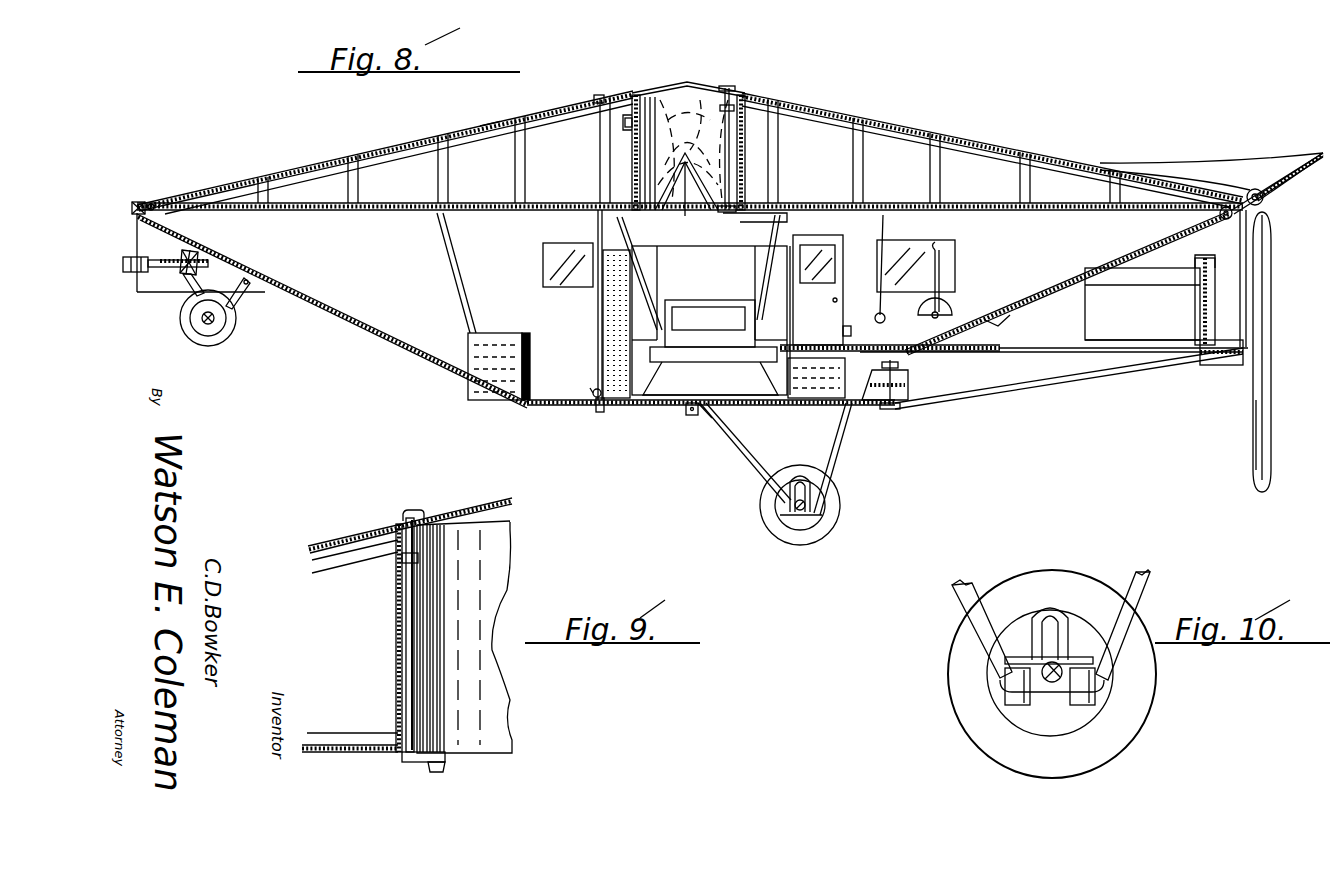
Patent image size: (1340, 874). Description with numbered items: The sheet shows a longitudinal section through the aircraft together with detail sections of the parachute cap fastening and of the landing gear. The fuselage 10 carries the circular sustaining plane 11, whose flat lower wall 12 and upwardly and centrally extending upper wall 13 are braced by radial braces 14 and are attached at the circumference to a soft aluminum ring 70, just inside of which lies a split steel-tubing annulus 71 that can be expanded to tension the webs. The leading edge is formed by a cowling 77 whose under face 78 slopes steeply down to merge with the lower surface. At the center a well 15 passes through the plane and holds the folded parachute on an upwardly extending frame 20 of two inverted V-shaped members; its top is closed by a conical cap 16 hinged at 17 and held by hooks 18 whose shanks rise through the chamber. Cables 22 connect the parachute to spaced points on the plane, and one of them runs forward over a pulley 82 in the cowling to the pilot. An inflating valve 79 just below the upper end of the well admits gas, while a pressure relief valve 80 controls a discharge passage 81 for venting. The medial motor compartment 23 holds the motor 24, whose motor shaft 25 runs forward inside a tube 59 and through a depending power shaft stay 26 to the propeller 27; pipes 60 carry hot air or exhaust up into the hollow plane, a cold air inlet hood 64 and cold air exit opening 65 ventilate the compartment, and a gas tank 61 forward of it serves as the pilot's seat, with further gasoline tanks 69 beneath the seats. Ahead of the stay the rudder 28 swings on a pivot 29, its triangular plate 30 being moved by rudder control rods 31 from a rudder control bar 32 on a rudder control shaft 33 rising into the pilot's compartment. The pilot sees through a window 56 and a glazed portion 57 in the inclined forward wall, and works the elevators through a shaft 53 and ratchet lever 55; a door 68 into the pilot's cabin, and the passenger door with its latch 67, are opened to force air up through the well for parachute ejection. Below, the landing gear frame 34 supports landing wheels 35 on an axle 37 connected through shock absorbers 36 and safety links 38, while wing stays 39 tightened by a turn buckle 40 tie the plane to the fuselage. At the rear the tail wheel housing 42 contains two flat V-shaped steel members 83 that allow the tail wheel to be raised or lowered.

In FIG. 8, the fuselage 10 is at (395, 342).
In FIG. 8, the sustaining plane 11 is at (492, 103).
In FIG. 8, the lower wall 12 is at (343, 212).
In FIG. 9, the lower wall 12 is at (352, 756).
In FIG. 8, the upper wall 13 is at (420, 145).
In FIG. 9, the upper wall 13 is at (313, 546).
In FIG. 8, the radial braces 14 is at (360, 186).
In FIG. 9, the radial braces 14 is at (352, 557).
In FIG. 8, the well 15 is at (688, 118).
In FIG. 9, the well 15 is at (495, 688).
In FIG. 8, the cap 16 is at (655, 92).
In FIG. 9, the cap 16 is at (500, 500).
In FIG. 8, the hinge 17 is at (598, 94).
In FIG. 8, the hooks 18 is at (730, 88).
In FIG. 9, the hooks 18 is at (420, 510).
In FIG. 8, the frame 20 is at (668, 180).
In FIG. 8, the cables 22 is at (906, 124).
In FIG. 8, the motor compartment 23 is at (706, 258).
In FIG. 8, the motor 24 is at (707, 310).
In FIG. 8, the motor shaft 25 is at (1075, 352).
In FIG. 8, the power shaft stay 26 is at (1230, 304).
In FIG. 8, the propeller 27 is at (1270, 410).
In FIG. 8, the rudder 28 is at (1090, 322).
In FIG. 8, the pivot 29 is at (1190, 255).
In FIG. 8, the triangular plate 30 is at (1125, 352).
In FIG. 8, the rudder control rods 31 is at (995, 380).
In FIG. 8, the rudder control bar 32 is at (888, 406).
In FIG. 8, the rudder control shaft 33 is at (918, 396).
In FIG. 8, the landing gear frame 34 is at (745, 460).
In FIG. 10, the landing gear frame 34 is at (968, 596).
In FIG. 8, the landing wheels 35 is at (795, 535).
In FIG. 10, the landing wheels 35 is at (1140, 698).
In FIG. 10, the shock absorbers 36 is at (1018, 695).
In FIG. 8, the axle 37 is at (812, 512).
In FIG. 10, the axle 37 is at (1055, 695).
In FIG. 10, the safety links 38 is at (1052, 608).
In FIG. 8, the wing stays 39 is at (712, 415).
In FIG. 8, the turn buckle 40 is at (688, 416).
In FIG. 8, the tail wheel housing 42 is at (137, 237).
In FIG. 8, the shaft 53 is at (952, 318).
In FIG. 8, the ratchet lever 55 is at (941, 270).
In FIG. 8, the window 56 is at (955, 245).
In FIG. 8, the glazed portion 57 is at (1040, 295).
In FIG. 8, the tube 59 is at (922, 335).
In FIG. 8, the pipes 60 is at (626, 232).
In FIG. 8, the gas tank 61 is at (808, 400).
In FIG. 8, the cold air inlet hood 64 is at (750, 280).
In FIG. 8, the cold air exit opening 65 is at (658, 270).
In FIG. 8, the latch 67 is at (861, 331).
In FIG. 8, the door 68 is at (855, 280).
In FIG. 8, the gasoline tanks 69 is at (608, 412).
In FIG. 8, the ring 70 is at (132, 206).
In FIG. 8, the annulus 71 is at (151, 203).
In FIG. 8, the cowling 77 is at (1310, 153).
In FIG. 8, the under face of the cowling 78 is at (1305, 175).
In FIG. 8, the inflating valve 79 is at (623, 122).
In FIG. 8, the pressure relief valve 80 is at (592, 391).
In FIG. 8, the discharge passage 81 is at (598, 305).
In FIG. 8, the pulley 82 is at (1253, 189).
In FIG. 8, the V-shaped steel members 83 is at (238, 300).